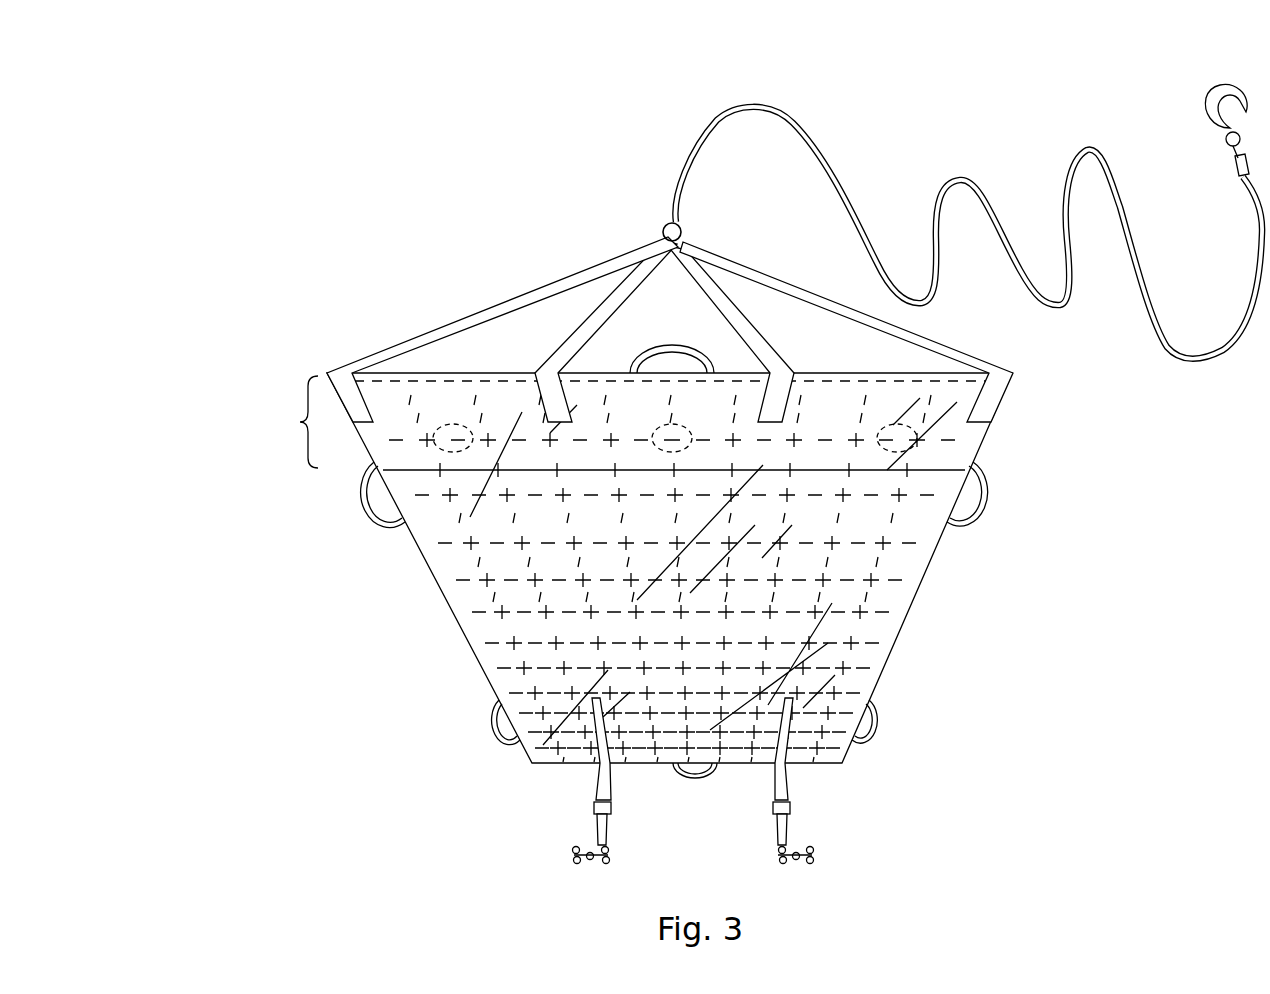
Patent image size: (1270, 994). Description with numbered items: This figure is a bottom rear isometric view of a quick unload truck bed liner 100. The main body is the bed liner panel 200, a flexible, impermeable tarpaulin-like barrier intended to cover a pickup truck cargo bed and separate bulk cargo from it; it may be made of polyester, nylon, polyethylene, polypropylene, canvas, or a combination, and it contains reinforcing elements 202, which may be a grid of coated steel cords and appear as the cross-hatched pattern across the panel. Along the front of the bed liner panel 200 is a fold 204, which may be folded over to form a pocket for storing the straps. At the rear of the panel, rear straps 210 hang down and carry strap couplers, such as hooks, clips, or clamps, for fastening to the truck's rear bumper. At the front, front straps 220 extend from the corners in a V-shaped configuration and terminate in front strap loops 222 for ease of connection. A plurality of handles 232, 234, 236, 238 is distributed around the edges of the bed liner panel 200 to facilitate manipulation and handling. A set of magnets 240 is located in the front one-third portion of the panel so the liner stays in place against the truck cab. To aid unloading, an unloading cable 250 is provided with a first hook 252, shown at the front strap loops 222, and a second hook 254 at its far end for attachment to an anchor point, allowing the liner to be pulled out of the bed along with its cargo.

The quick unload truck bed liner 100 is at (155, 190).
The bed liner panel 200 is at (470, 598).
The reinforcing elements 202 is at (907, 543).
The fold 204 is at (283, 422).
The rear straps 210 is at (598, 790).
The front straps 220 is at (712, 290).
The front strap loops 222 is at (703, 250).
The handle 232 is at (643, 357).
The handle 234 is at (700, 780).
The handle 236 is at (373, 503).
The handle 238 is at (987, 494).
The magnets 240 is at (885, 438).
The unloading cable 250 is at (964, 180).
The first hook 252 is at (663, 226).
The second hook 254 is at (1213, 100).